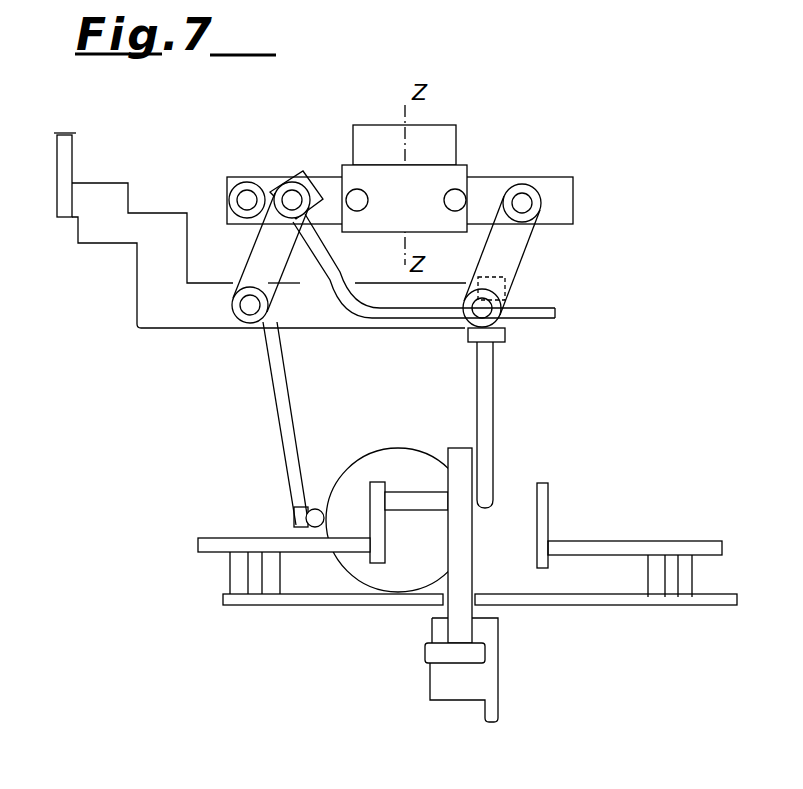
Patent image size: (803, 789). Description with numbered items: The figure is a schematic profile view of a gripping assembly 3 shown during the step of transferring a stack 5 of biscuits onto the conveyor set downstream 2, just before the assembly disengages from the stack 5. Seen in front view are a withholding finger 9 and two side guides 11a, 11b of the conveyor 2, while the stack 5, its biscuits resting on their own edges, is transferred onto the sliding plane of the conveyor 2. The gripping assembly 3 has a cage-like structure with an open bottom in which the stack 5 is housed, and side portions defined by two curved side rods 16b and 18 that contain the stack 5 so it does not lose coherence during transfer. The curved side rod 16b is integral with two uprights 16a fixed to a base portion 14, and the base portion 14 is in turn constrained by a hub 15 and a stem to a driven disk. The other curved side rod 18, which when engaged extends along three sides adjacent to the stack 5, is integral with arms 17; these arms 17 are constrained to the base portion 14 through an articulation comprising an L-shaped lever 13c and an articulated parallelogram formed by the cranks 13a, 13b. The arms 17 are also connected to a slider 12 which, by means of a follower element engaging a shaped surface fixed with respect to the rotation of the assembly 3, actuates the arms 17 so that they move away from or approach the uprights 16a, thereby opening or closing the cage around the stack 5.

The conveyor set downstream 2 is at (436, 580).
The gripping assembly 3 is at (251, 249).
The stack 5 is at (397, 450).
The withholding finger 9 is at (448, 618).
The side guide 11a is at (200, 545).
The side guide 11b is at (706, 548).
The slider 12 is at (101, 184).
The crank 13a is at (258, 252).
The crank 13b is at (522, 245).
The L-shaped lever 13c is at (556, 313).
The base portion 14 is at (568, 186).
The hub 15 is at (458, 146).
The uprights 16a is at (276, 395).
The curved side rod 16b is at (294, 513).
The arms 17 is at (488, 375).
The curved side rod 18 is at (433, 495).